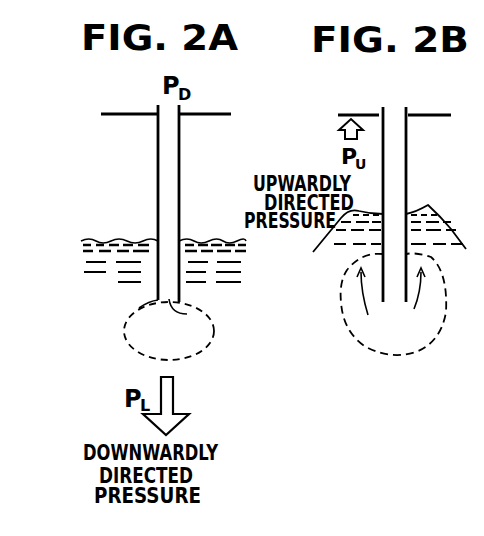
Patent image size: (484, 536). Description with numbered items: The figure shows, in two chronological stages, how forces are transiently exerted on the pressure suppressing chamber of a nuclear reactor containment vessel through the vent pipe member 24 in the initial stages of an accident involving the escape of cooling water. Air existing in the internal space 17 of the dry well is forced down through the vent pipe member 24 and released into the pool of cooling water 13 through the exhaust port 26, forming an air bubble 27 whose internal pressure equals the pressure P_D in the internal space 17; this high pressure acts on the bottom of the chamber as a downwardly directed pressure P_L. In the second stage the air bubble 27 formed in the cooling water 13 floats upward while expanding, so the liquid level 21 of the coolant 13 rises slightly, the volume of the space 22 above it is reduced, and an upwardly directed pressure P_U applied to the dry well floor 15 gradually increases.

The pool of cooling water 13 is at (115, 321).
The dry well floor 15 is at (213, 112).
The internal space 17 is at (144, 90).
The liquid level 21 is at (113, 241).
The space 22 is at (135, 182).
The vent pipe member 24 is at (178, 168).
The exhaust port 26 is at (186, 312).
The air bubble 27 is at (195, 353).